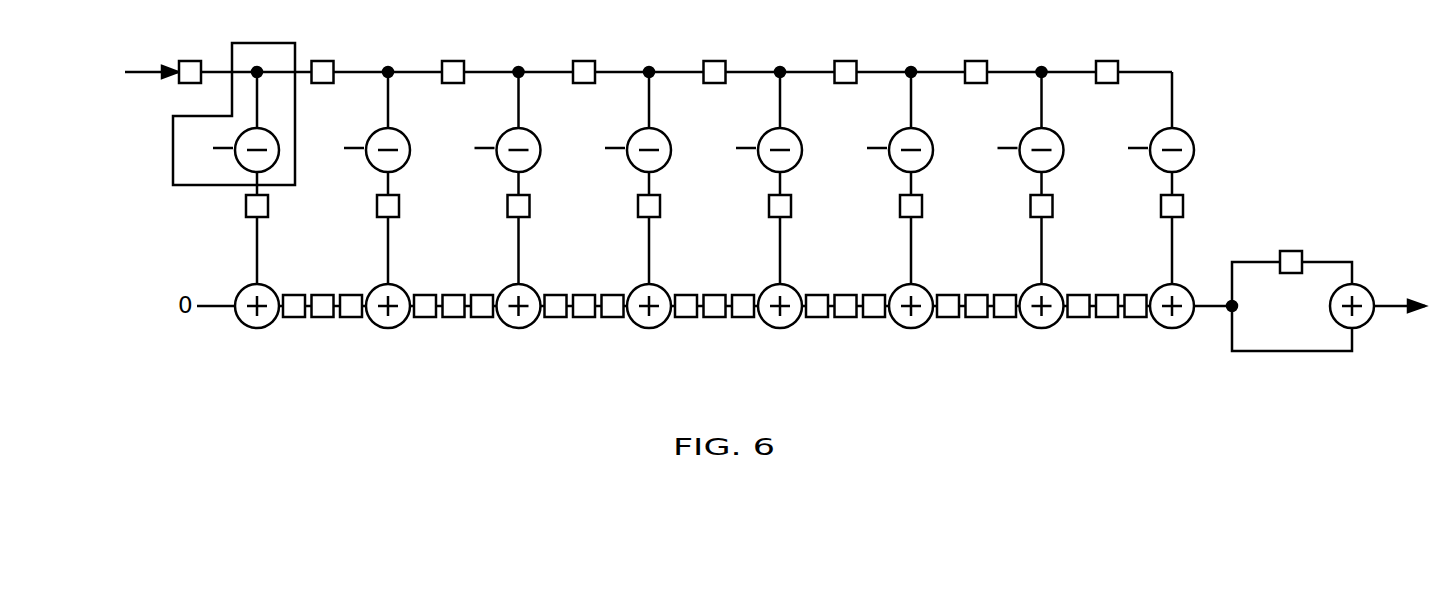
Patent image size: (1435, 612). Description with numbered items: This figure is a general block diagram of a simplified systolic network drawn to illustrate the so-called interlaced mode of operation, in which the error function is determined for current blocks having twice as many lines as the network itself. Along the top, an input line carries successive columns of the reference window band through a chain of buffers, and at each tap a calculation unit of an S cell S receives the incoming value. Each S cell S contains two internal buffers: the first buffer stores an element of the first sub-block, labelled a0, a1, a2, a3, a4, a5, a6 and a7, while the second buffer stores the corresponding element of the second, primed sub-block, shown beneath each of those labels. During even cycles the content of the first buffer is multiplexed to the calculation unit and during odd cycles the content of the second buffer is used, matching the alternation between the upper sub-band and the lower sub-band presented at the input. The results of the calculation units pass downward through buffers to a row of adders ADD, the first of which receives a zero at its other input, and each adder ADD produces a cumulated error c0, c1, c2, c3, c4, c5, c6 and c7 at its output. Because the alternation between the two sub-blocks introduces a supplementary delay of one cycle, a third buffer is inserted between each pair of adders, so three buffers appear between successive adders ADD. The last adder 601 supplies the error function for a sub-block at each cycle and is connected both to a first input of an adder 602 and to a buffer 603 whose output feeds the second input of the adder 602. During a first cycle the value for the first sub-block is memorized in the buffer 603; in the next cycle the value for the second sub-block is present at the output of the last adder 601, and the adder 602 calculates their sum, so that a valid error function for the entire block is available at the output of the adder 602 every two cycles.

The last adder 601 is at (1160, 328).
The adder 602 is at (1372, 290).
The buffer 603 is at (1283, 251).
The S cell S is at (173, 172).
The adder ADD is at (243, 290).
The first sub-block element a0 and second sub-block element a0' a0 is at (230, 175).
The first sub-block element a1 and second sub-block element a1' a1 is at (361, 175).
The first sub-block element a2 and second sub-block element a2' a2 is at (492, 175).
The first sub-block element a3 and second sub-block element a3' a3 is at (622, 175).
The first sub-block element a4 and second sub-block element a4' a4 is at (753, 175).
The first sub-block element a5 and second sub-block element a5' a5 is at (884, 175).
The first sub-block element a6 and second sub-block element a6' a6 is at (1015, 175).
The first sub-block element a7 and second sub-block element a7' a7 is at (1145, 178).
The cumulated error output c0 is at (300, 290).
The cumulated error output c1 is at (431, 290).
The cumulated error output c2 is at (562, 290).
The cumulated error output c3 is at (692, 290).
The cumulated error output c4 is at (823, 290).
The cumulated error output c5 is at (954, 290).
The cumulated error output c6 is at (1085, 290).
The cumulated error output c7 is at (1177, 290).